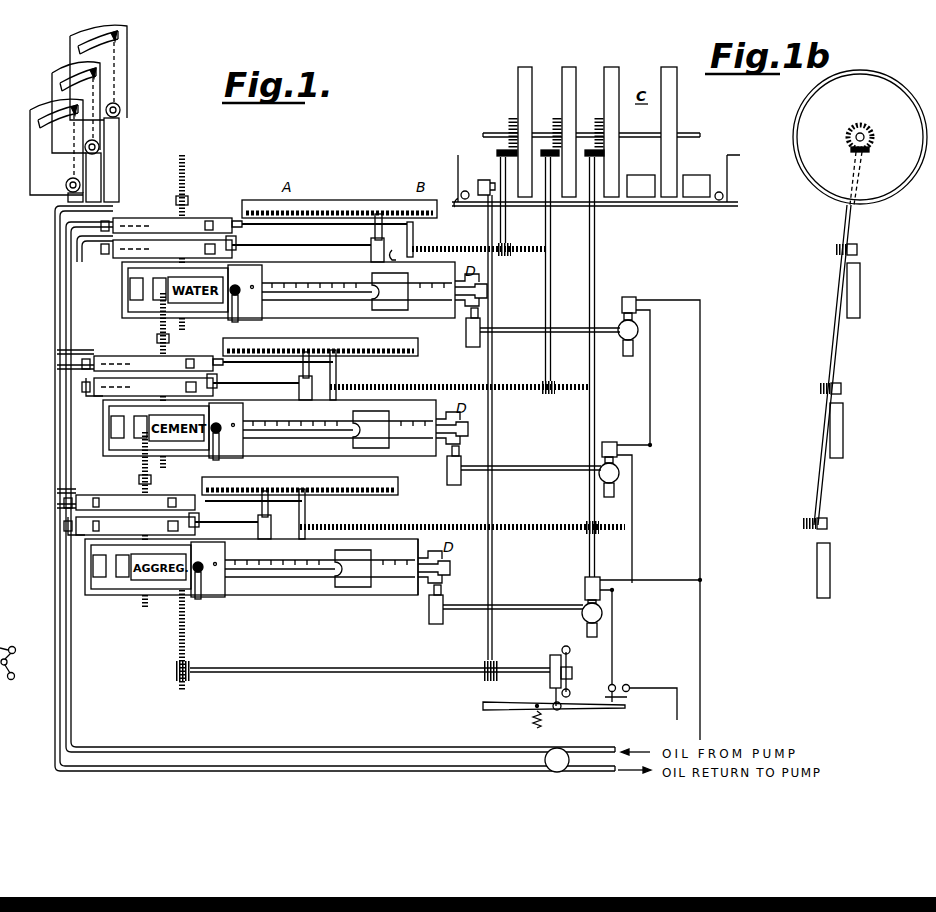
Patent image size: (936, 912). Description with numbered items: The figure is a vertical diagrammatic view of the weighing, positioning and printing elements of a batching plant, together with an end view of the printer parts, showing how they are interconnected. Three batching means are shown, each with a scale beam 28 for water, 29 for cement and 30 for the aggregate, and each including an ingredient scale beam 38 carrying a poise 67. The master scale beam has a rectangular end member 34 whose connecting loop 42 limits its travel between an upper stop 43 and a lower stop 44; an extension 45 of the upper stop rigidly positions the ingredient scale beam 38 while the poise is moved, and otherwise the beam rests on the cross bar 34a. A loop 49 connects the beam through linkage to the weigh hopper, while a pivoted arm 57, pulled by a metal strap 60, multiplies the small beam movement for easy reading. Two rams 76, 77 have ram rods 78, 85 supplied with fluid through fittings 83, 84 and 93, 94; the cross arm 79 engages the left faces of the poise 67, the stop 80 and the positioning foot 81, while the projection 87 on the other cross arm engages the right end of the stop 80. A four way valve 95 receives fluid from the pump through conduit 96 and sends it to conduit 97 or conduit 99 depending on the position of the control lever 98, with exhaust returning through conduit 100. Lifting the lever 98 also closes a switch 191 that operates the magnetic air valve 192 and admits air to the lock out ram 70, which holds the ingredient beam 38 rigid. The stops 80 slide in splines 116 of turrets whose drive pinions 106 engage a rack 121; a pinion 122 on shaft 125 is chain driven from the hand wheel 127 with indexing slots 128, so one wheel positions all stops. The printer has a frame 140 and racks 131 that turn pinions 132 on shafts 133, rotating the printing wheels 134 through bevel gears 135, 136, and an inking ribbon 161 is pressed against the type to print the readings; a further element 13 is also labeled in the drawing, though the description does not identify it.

In FIG. 1, the vertical rod 13 is at (551, 290).
In FIG. 1, the scale beam for water 28 is at (333, 301).
In FIG. 1, the scale beam for cement 29 is at (381, 439).
In FIG. 1, the scale beam for the aggregate 30 is at (338, 578).
In FIG. 1B, the end member 34 is at (861, 290).
In FIG. 1, the cross bar 34a is at (408, 577).
In FIG. 1, the ingredient scale beam 38 is at (293, 301).
In FIG. 1, the connecting loop 42 is at (488, 293).
In FIG. 1, the upper stop 43 is at (484, 277).
In FIG. 1, the lower stop 44 is at (447, 583).
In FIG. 1, the extension 45 is at (425, 540).
In FIG. 1, the loop 49 is at (199, 599).
In FIG. 1, the pivoted arm 57 is at (128, 66).
In FIG. 1, the metal strap 60 is at (120, 150).
In FIG. 1, the poise 67 is at (384, 301).
In FIG. 1, the lock out ram 70 is at (466, 336).
In FIG. 1, the ram 76 is at (192, 240).
In FIG. 1, the ram 77 is at (135, 218).
In FIG. 1, the ram rod 78 is at (266, 250).
In FIG. 1, the cross arm 79 is at (371, 258).
In FIG. 1, the stop 80 is at (375, 237).
In FIG. 1, the positioning foot 81 is at (399, 259).
In FIG. 1, the fitting 83 is at (107, 262).
In FIG. 1, the fitting 84 is at (222, 379).
In FIG. 1, the ram rod 85 is at (309, 226).
In FIG. 1, the projection 87 is at (414, 232).
In FIG. 1, the fitting 93 is at (104, 221).
In FIG. 1, the fitting 94 is at (237, 221).
In FIG. 1, the valve 95 is at (565, 750).
In FIG. 1, the conduit 96 is at (606, 749).
In FIG. 1, the conduit 97 is at (54, 430).
In FIG. 1, the control lever 98 is at (490, 712).
In FIG. 1, the conduit 99 is at (65, 460).
In FIG. 1, the conduit 100 is at (583, 772).
In FIG. 1, the drive pinion 106 is at (176, 199).
In FIG. 1, the splines 116 is at (333, 212).
In FIG. 1, the rack 121 is at (186, 166).
In FIG. 1, the pinion 122 is at (191, 668).
In FIG. 1, the shaft 125 is at (316, 668).
In FIG. 1, the hand wheel 127 is at (571, 650).
In FIG. 1, the indexing slots 128 is at (550, 660).
In FIG. 1, the rack 131 is at (508, 256).
In FIG. 1B, the rack 131 is at (858, 250).
In FIG. 1, the pinion 132 is at (506, 243).
In FIG. 1B, the pinion 132 is at (834, 250).
In FIG. 1, the shaft 133 is at (506, 217).
In FIG. 1B, the shaft 133 is at (831, 332).
In FIG. 1, the printing wheel 134 is at (612, 67).
In FIG. 1B, the printing wheel 134 is at (909, 88).
In FIG. 1, the bevel gear 135 is at (497, 153).
In FIG. 1B, the bevel gear 135 is at (868, 153).
In FIG. 1, the bevel gear 136 is at (509, 120).
In FIG. 1B, the bevel gear 136 is at (874, 130).
In FIG. 1, the frame 140 is at (640, 207).
In FIG. 1, the inking ribbon 161 is at (732, 160).
In FIG. 1, the switch 191 is at (617, 686).
In FIG. 1, the magnetic air valve 192 is at (640, 330).